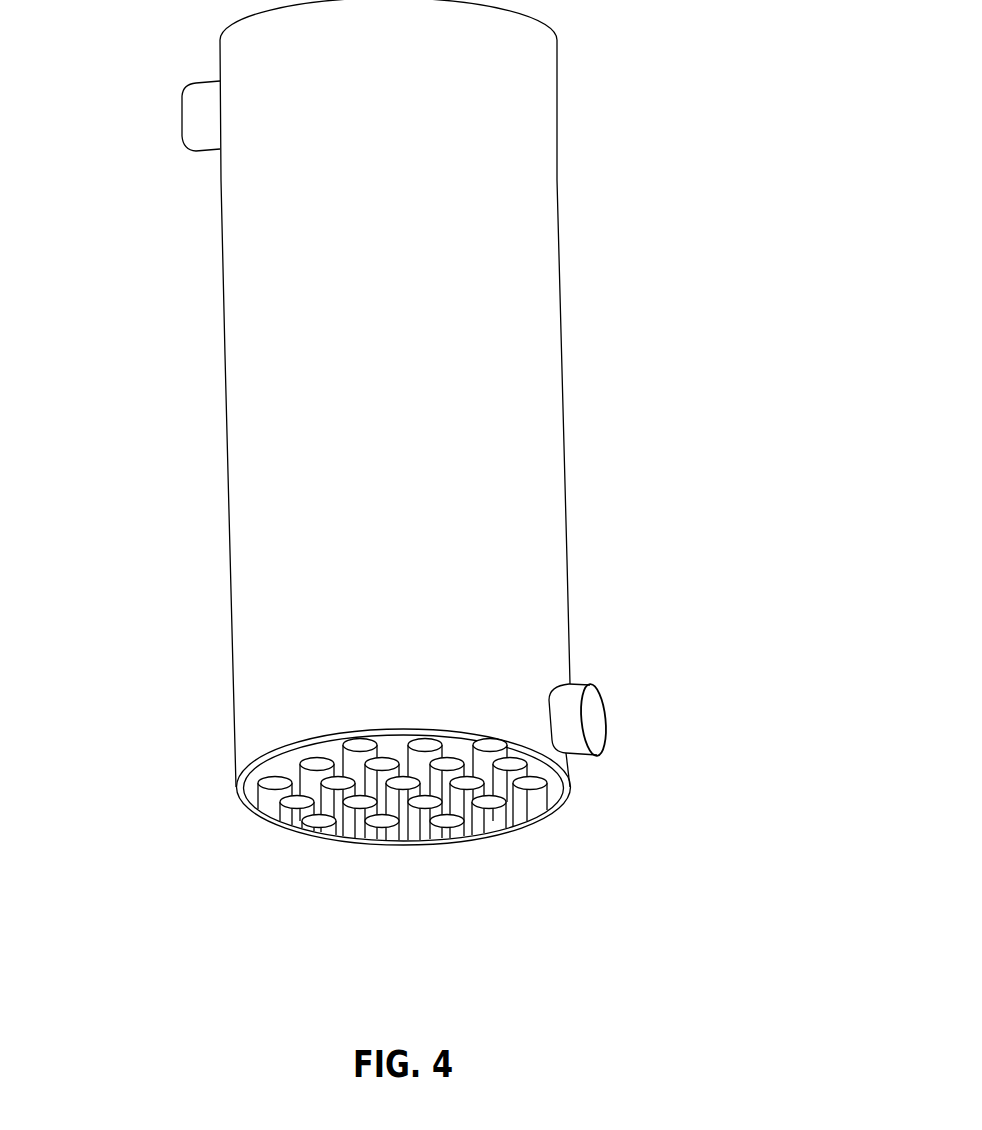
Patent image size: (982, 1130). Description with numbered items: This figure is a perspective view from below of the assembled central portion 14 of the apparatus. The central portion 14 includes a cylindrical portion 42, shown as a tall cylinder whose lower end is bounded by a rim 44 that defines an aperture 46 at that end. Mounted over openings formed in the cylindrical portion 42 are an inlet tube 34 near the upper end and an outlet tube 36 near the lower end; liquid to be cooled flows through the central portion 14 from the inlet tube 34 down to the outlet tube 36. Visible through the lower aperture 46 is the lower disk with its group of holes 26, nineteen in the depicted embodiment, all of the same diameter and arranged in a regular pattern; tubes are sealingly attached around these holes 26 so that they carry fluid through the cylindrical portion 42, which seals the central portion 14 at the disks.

The central portion 14 is at (617, 398).
The cylindrical portion 42 is at (225, 355).
The inlet tube 34 is at (183, 123).
The outlet tube 36 is at (592, 723).
The rim 44 is at (402, 843).
The aperture 46 is at (523, 808).
The holes 26 is at (455, 833).